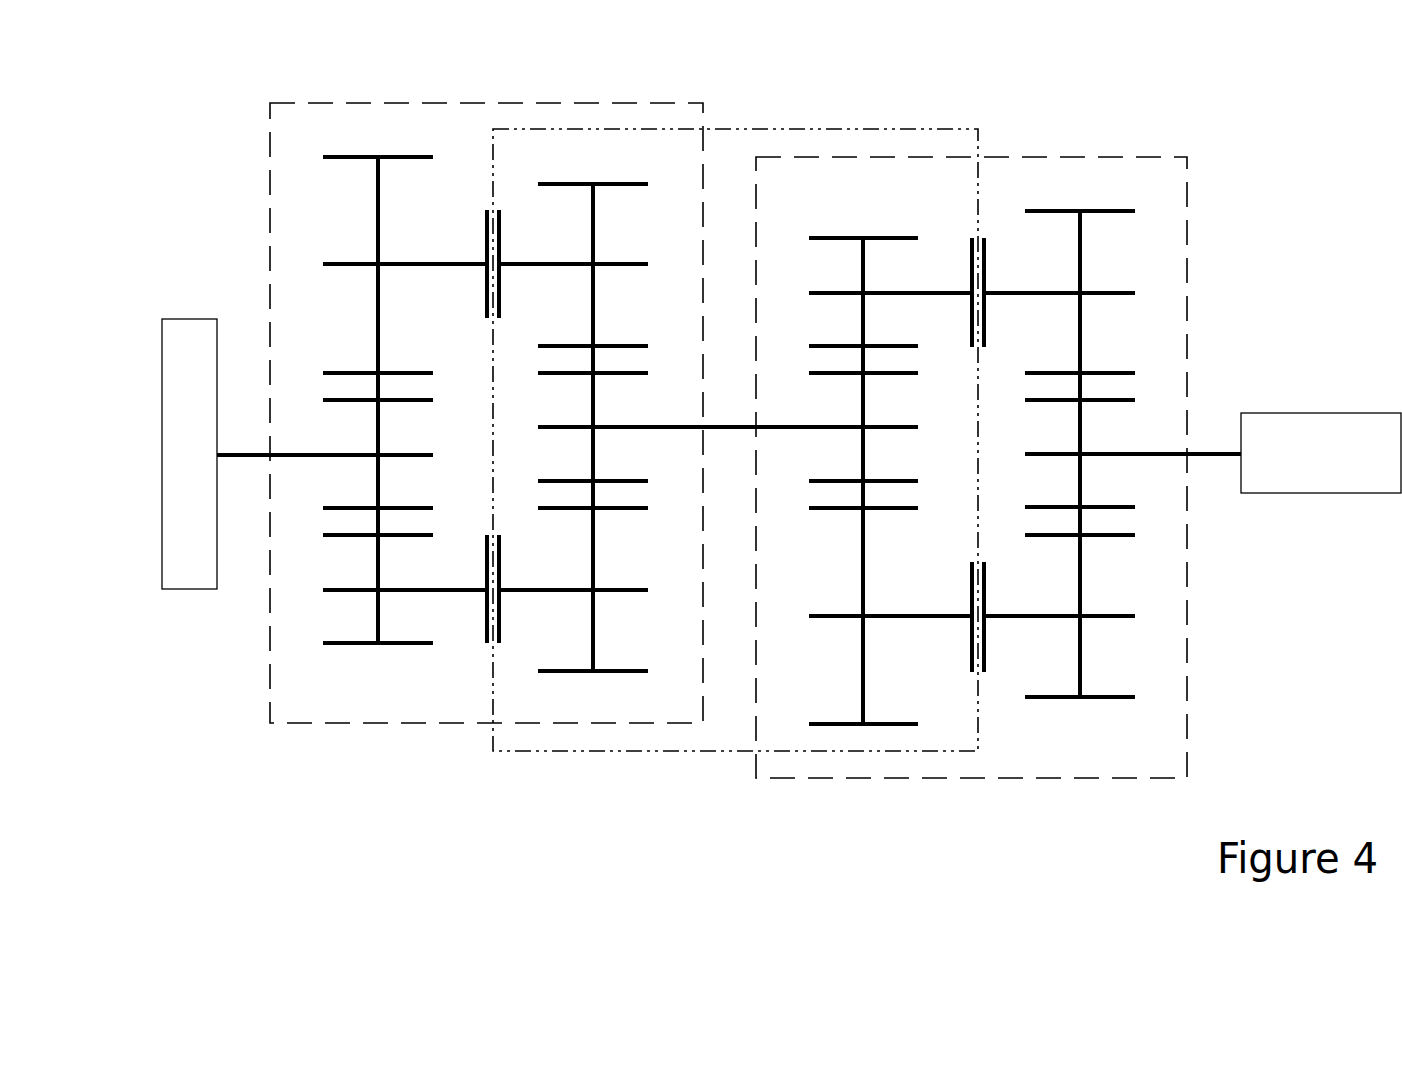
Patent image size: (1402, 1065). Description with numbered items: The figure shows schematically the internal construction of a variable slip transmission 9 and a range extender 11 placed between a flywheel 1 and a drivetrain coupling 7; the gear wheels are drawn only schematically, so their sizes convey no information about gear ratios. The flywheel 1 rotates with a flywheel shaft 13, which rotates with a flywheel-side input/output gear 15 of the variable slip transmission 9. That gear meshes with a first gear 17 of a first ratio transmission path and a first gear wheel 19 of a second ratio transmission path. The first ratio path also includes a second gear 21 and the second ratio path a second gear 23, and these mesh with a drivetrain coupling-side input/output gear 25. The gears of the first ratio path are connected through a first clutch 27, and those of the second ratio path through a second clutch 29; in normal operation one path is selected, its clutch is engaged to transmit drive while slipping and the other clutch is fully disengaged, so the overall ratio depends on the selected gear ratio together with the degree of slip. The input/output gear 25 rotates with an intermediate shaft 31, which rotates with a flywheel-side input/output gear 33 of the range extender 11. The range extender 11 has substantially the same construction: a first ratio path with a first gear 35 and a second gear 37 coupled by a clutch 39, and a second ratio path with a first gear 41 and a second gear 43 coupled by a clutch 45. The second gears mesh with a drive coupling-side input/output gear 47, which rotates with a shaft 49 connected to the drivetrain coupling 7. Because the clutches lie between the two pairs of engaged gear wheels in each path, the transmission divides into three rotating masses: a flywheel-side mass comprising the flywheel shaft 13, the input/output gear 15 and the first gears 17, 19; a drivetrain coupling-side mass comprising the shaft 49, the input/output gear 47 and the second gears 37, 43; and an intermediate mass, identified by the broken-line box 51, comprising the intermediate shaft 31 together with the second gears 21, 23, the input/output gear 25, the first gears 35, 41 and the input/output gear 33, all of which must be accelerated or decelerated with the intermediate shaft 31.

The flywheel 1 is at (162, 402).
The drivetrain coupling 7 is at (1322, 413).
The variable slip transmission 9 is at (268, 158).
The range extender 11 is at (1188, 210).
The flywheel shaft 13 is at (297, 455).
The flywheel-side input/output gear 15 is at (377, 425).
The first gear 17 is at (351, 157).
The first gear wheel 19 is at (350, 643).
The second gear 21 is at (567, 183).
The second gear 23 is at (620, 672).
The drivetrain coupling-side input/output gear 25 is at (593, 400).
The first clutch 27 is at (485, 238).
The second clutch 29 is at (483, 617).
The intermediate shaft 31 is at (728, 425).
The flywheel-side input/output gear 33 is at (858, 453).
The first gear 35 is at (890, 238).
The second gear 37 is at (1107, 210).
The clutch 39 is at (987, 263).
The first gear 41 is at (837, 725).
The second gear 43 is at (1105, 697).
The clutch 45 is at (970, 643).
The drive coupling-side input/output gear 47 is at (1083, 480).
The shaft 49 is at (1160, 454).
The broken-line box 51 is at (538, 752).